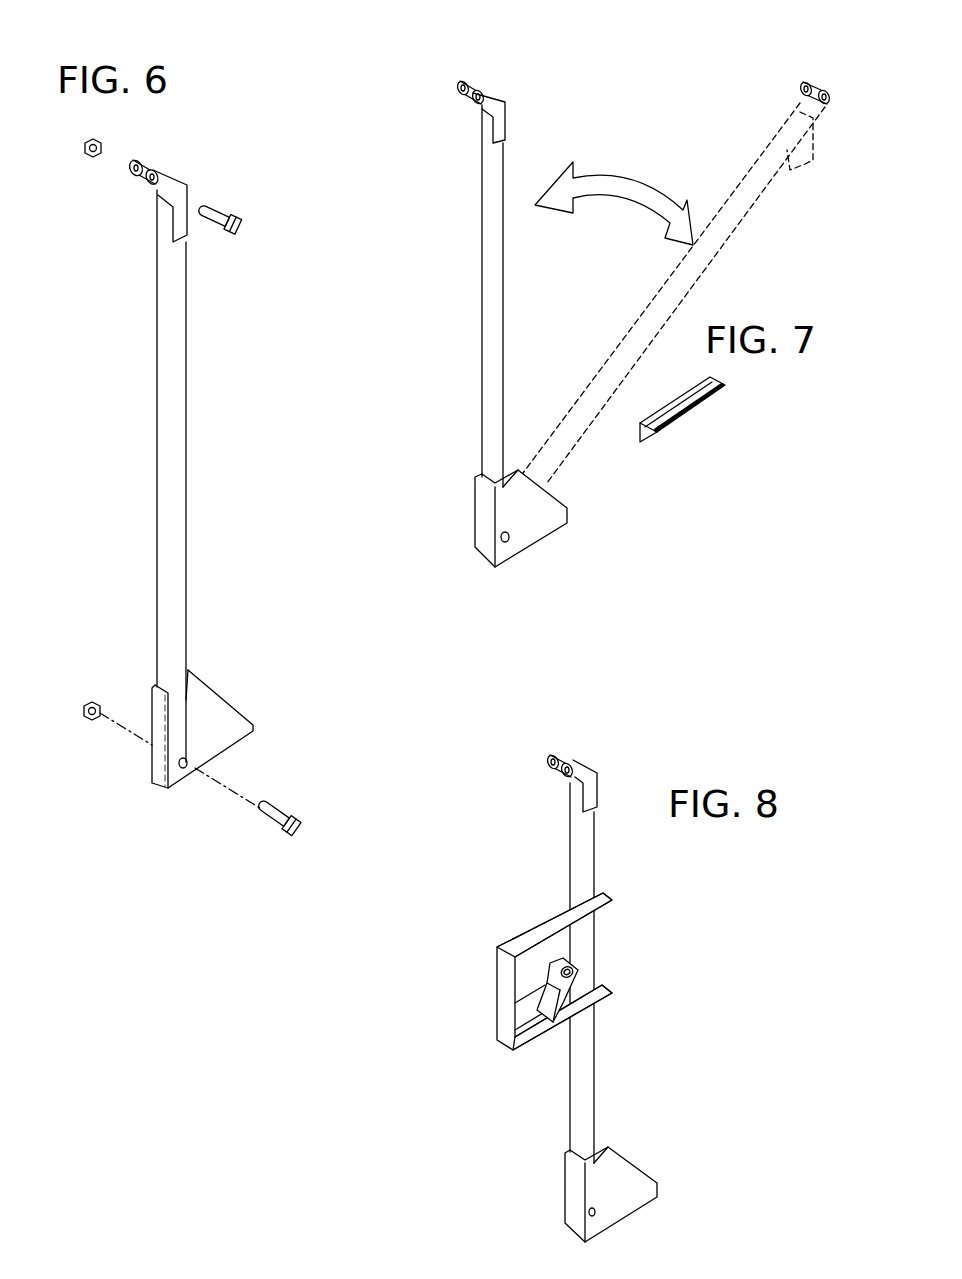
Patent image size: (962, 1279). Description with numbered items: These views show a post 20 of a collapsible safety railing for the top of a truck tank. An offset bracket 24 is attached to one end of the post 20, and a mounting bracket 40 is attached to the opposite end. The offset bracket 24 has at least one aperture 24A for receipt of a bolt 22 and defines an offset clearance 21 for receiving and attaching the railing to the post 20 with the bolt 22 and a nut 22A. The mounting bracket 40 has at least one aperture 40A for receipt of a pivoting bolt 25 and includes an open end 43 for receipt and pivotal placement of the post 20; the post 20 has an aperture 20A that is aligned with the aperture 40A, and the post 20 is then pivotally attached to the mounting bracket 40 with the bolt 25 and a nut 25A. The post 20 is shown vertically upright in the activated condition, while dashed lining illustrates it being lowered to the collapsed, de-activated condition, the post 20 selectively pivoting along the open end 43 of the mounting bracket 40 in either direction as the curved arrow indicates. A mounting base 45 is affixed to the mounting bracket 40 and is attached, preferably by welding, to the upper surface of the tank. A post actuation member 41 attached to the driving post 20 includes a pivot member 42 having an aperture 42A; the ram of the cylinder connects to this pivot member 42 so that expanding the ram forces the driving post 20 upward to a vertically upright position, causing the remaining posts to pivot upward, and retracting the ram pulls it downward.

In FIG. 6, the post 20 is at (235, 476).
In FIG. 7, the post 20 is at (594, 295).
In FIG. 8, the post 20 is at (519, 990).
In FIG. 6, the aperture 20A is at (278, 749).
In FIG. 6, the offset clearance 21 is at (148, 172).
In FIG. 7, the offset clearance 21 is at (478, 88).
In FIG. 8, the offset clearance 21 is at (567, 762).
In FIG. 6, the bolt 22 is at (243, 231).
In FIG. 7, the bolt 22 is at (828, 108).
In FIG. 6, the nut 22A is at (60, 178).
In FIG. 7, the nut 22A is at (577, 95).
In FIG. 6, the offset bracket 24 is at (218, 144).
In FIG. 7, the offset bracket 24 is at (644, 95).
In FIG. 8, the offset bracket 24 is at (655, 741).
In FIG. 6, the aperture 24A is at (91, 257).
In FIG. 8, the aperture 24A is at (498, 723).
In FIG. 6, the pivoting bolt 25 is at (308, 831).
In FIG. 7, the pivoting bolt 25 is at (575, 598).
In FIG. 6, the nut 25A is at (99, 630).
In FIG. 6, the mounting bracket 40 is at (260, 700).
In FIG. 7, the mounting bracket 40 is at (580, 532).
In FIG. 8, the mounting bracket 40 is at (662, 1153).
In FIG. 8, the aperture 40A is at (703, 1182).
In FIG. 8, the post actuation member 41 is at (493, 971).
In FIG. 8, the pivot member 42 is at (513, 924).
In FIG. 8, the aperture 42A is at (661, 934).
In FIG. 6, the open end 43 is at (195, 697).
In FIG. 7, the open end 43 is at (510, 472).
In FIG. 8, the open end 43 is at (597, 1147).
In FIG. 7, the mounting base 45 is at (705, 463).